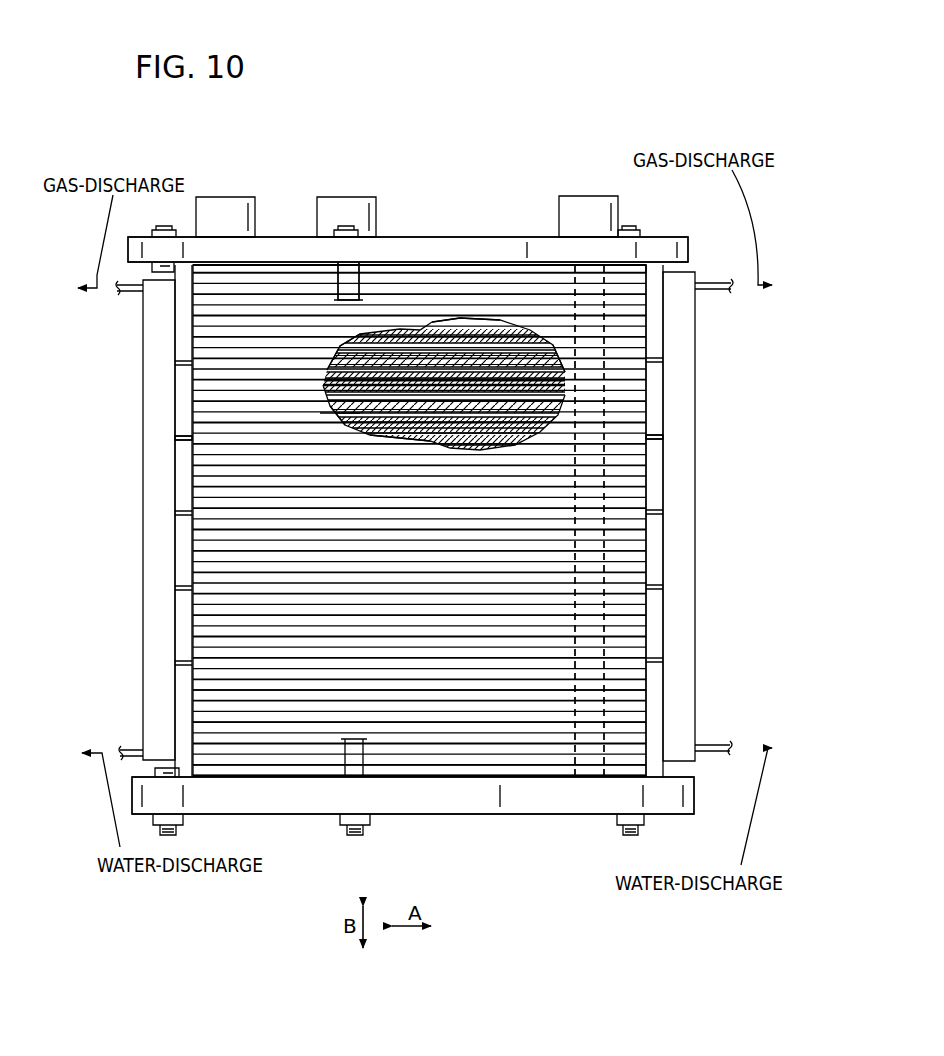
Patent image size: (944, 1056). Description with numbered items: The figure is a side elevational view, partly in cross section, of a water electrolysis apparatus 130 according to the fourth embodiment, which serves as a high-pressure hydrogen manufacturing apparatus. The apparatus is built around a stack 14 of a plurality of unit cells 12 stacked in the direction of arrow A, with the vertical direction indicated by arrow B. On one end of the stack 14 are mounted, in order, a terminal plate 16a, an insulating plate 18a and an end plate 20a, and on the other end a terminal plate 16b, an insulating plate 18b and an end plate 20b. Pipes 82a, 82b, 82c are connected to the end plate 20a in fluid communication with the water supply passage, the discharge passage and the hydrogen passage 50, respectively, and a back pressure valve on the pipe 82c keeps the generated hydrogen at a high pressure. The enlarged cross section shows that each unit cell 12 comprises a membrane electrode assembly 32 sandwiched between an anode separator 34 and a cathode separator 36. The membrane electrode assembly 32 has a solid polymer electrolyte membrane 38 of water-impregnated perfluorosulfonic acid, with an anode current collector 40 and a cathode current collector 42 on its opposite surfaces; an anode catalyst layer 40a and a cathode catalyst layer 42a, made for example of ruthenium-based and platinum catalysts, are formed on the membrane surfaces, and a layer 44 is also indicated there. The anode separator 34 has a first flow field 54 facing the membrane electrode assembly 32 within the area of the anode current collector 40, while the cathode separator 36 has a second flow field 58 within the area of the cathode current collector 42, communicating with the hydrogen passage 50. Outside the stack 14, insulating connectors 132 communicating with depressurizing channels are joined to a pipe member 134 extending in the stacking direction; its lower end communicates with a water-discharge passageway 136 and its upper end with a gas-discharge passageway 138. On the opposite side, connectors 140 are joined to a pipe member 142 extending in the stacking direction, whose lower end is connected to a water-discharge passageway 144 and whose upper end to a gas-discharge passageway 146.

The water electrolysis apparatus 130 is at (450, 112).
The unit cell 12 is at (512, 725).
The stack 14 is at (615, 856).
The terminal plate 16a is at (506, 280).
The terminal plate 16b is at (492, 770).
The insulating plate 18a is at (455, 268).
The insulating plate 18b is at (444, 780).
The end plate 20a is at (650, 236).
The end plate 20b is at (388, 820).
The membrane electrode assembly 32 is at (280, 345).
The anode separator 34 is at (413, 330).
The cathode separator 36 is at (420, 415).
The solid polymer electrolyte membrane 38 is at (325, 385).
The anode current collector 40 is at (330, 375).
The anode catalyst layer 40a is at (438, 328).
The cathode current collector 42 is at (330, 396).
The cathode catalyst layer 42a is at (452, 440).
The gas diffusion layer 44 is at (548, 372).
The hydrogen passage 50 is at (595, 656).
The first flow field 54 is at (337, 352).
The second flow field 58 is at (352, 438).
The pipe 82a is at (221, 197).
The pipe 82b is at (347, 197).
The pipe 82c is at (589, 196).
The insulating connector 132 is at (186, 438).
The pipe member 134 is at (146, 492).
The water-discharge passageway 136 is at (121, 744).
The gas-discharge passageway 138 is at (116, 297).
The connector 140 is at (650, 434).
The pipe member 142 is at (694, 592).
The water-discharge passageway 144 is at (729, 742).
The gas-discharge passageway 146 is at (726, 294).